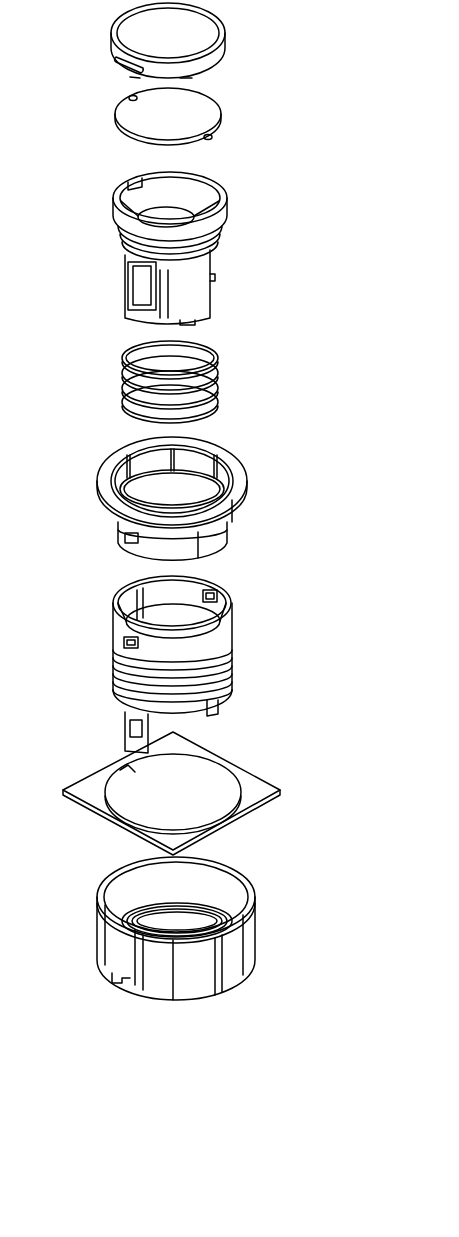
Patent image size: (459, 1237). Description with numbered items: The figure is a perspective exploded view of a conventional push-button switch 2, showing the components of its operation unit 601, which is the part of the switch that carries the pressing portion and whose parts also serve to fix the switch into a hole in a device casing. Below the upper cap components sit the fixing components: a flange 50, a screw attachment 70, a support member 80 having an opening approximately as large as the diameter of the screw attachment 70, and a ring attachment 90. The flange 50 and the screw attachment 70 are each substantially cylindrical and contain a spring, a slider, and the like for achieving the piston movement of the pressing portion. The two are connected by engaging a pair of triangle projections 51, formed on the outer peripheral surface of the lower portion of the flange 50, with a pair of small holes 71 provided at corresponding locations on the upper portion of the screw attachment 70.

The push-button switch 2 is at (22, 35).
The operation unit 601 is at (303, 10).
The flange 50 is at (229, 438).
The triangle projections 51 is at (118, 541).
The screw attachment 70 is at (229, 572).
The small holes 71 is at (222, 596).
The support member 80 is at (211, 758).
The ring attachment 90 is at (219, 868).